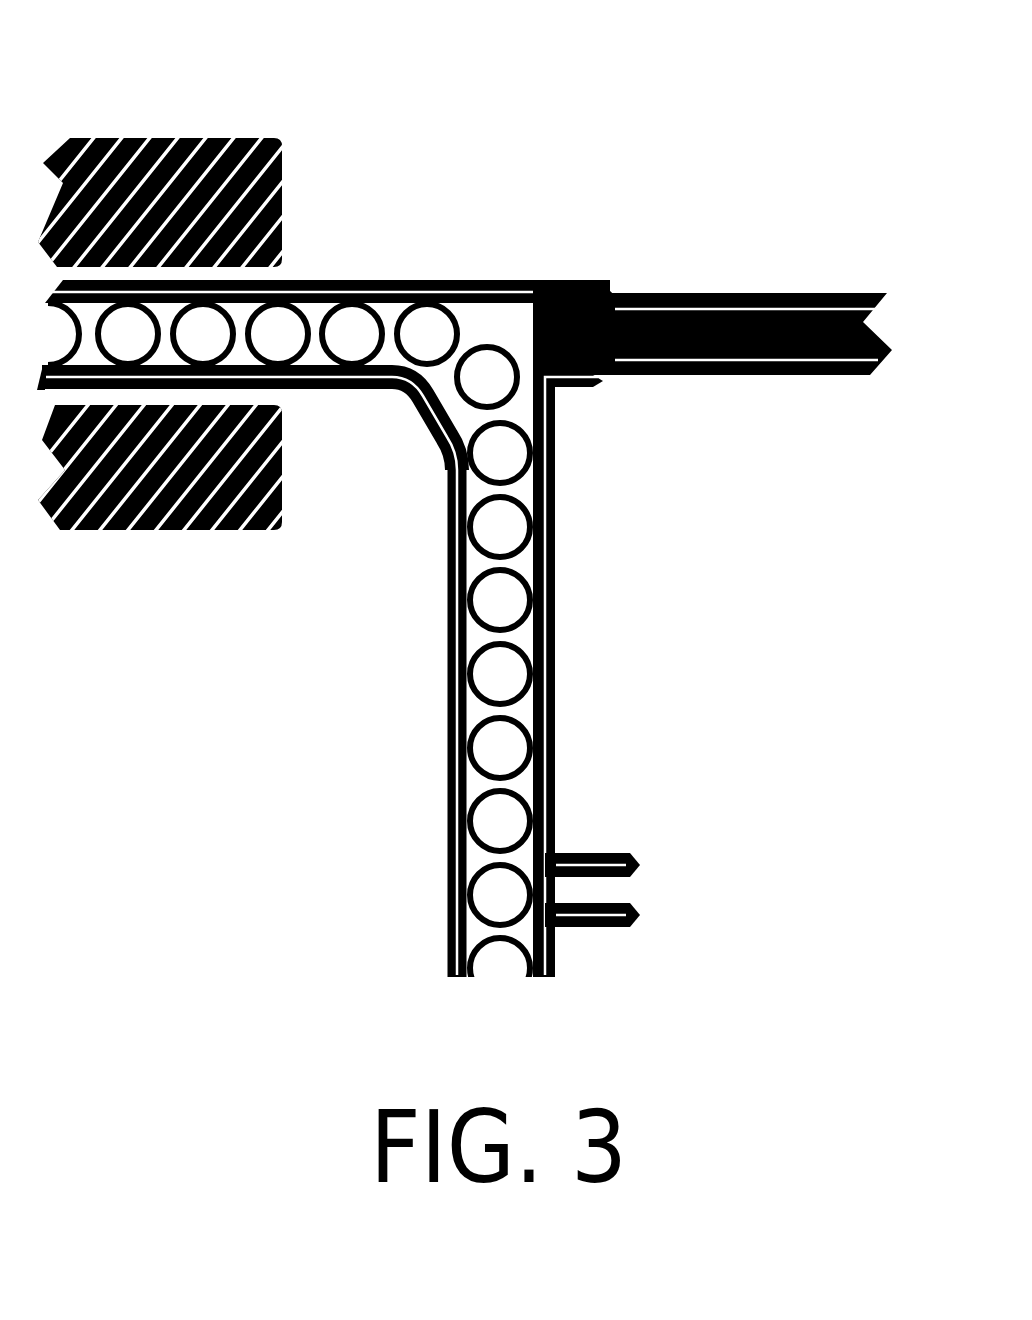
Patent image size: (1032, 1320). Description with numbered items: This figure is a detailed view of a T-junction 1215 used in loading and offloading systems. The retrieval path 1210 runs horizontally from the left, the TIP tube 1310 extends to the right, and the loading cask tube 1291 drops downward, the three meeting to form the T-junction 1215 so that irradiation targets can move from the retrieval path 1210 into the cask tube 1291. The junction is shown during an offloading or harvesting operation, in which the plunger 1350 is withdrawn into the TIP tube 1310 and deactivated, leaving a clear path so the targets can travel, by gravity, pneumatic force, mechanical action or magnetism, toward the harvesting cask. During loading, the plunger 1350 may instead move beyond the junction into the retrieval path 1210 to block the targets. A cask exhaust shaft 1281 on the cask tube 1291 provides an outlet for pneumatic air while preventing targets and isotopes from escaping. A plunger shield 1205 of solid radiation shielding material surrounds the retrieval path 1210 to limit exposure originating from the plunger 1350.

The plunger shield 1205 is at (178, 137).
The retrieval path 1210 is at (388, 268).
The loading cask tube 1291 is at (437, 948).
The T-junction 1215 is at (573, 415).
The plunger 1350 is at (593, 280).
The TIP tube 1310 is at (852, 298).
The cask exhaust shaft 1281 is at (627, 840).